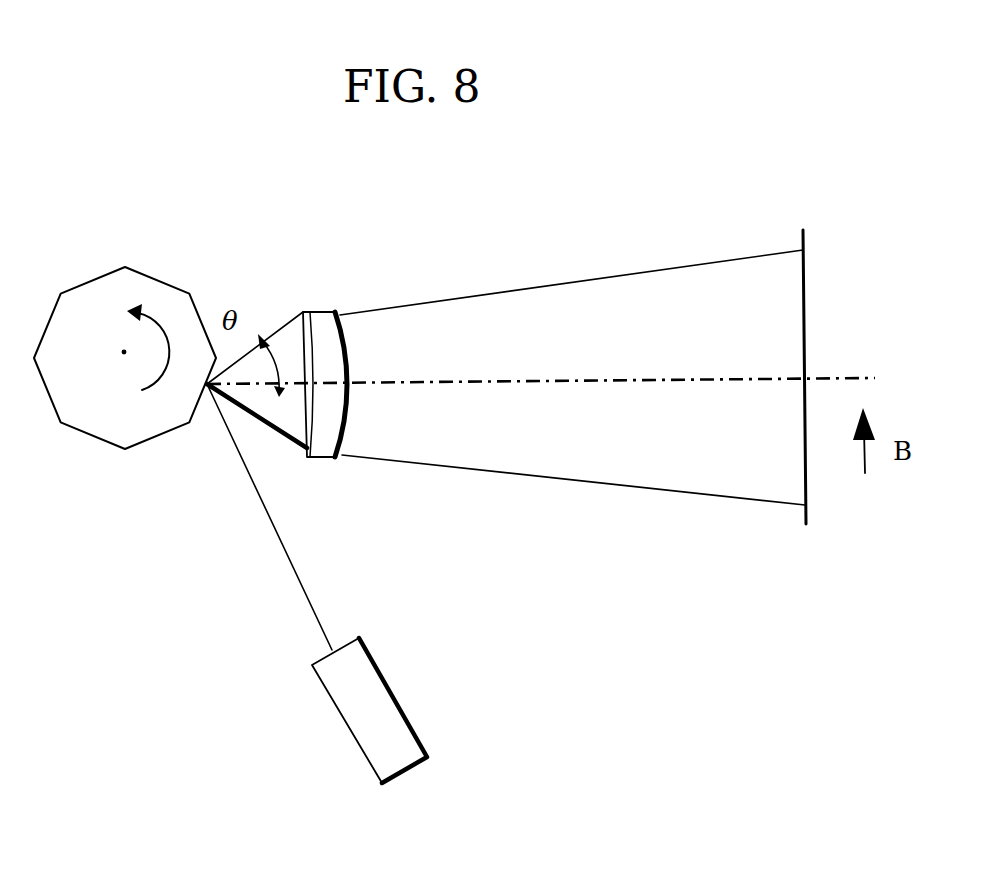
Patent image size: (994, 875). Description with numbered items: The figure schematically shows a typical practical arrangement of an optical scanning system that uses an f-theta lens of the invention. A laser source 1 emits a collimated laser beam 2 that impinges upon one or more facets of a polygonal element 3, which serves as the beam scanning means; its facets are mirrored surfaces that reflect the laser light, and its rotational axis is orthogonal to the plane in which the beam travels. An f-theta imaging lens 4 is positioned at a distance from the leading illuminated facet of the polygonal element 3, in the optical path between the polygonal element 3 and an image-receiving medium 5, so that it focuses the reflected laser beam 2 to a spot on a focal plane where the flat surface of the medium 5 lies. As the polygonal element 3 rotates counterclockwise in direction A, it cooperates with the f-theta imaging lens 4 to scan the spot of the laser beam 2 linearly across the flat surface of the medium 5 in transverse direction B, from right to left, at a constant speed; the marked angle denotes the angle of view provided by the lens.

The laser source 1 is at (385, 675).
The laser beam 2 is at (297, 577).
The polygonal element 3 is at (153, 278).
The f·θ imaging lens 4 is at (320, 312).
The image-receiving medium 5 is at (803, 298).